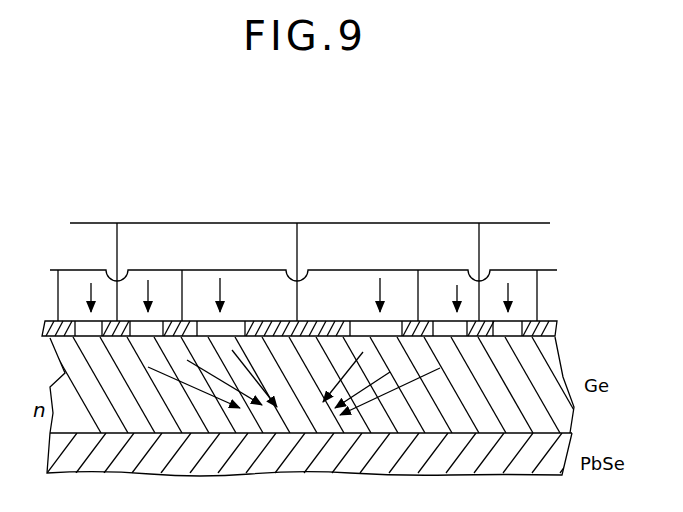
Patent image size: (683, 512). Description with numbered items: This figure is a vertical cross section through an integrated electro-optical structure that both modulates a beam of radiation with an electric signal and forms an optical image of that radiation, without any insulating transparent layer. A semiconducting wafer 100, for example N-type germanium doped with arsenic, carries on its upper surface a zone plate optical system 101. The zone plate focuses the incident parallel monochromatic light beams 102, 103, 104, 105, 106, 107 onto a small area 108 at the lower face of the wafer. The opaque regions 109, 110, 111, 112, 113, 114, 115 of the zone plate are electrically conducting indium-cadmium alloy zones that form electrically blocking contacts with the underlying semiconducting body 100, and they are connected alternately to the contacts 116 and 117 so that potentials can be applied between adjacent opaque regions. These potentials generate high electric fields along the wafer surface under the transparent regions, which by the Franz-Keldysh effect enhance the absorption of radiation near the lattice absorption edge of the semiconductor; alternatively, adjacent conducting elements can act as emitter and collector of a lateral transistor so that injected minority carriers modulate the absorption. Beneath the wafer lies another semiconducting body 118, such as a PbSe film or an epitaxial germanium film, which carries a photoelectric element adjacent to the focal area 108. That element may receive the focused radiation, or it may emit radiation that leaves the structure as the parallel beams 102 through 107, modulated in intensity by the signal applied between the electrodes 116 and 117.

The semiconducting wafer 100 is at (316, 385).
The zone plate optical system 101 is at (565, 327).
The incident parallel monochromatic light beam 102 is at (79, 297).
The incident parallel monochromatic light beam 103 is at (166, 296).
The incident parallel monochromatic light beam 104 is at (240, 295).
The incident parallel monochromatic light beam 105 is at (360, 295).
The incident parallel monochromatic light beam 106 is at (444, 296).
The incident parallel monochromatic light beam 107 is at (501, 297).
The small area 108 is at (315, 432).
The opaque region of the zone plate 109 is at (47, 342).
The opaque region of the zone plate 110 is at (113, 331).
The opaque region of the zone plate 111 is at (179, 331).
The opaque region of the zone plate 112 is at (284, 331).
The opaque region of the zone plate 113 is at (440, 368).
The opaque region of the zone plate 114 is at (483, 331).
The opaque region of the zone plate 115 is at (533, 331).
The contact 116 is at (334, 267).
The contact 117 is at (332, 290).
The semiconducting body 118 is at (318, 454).